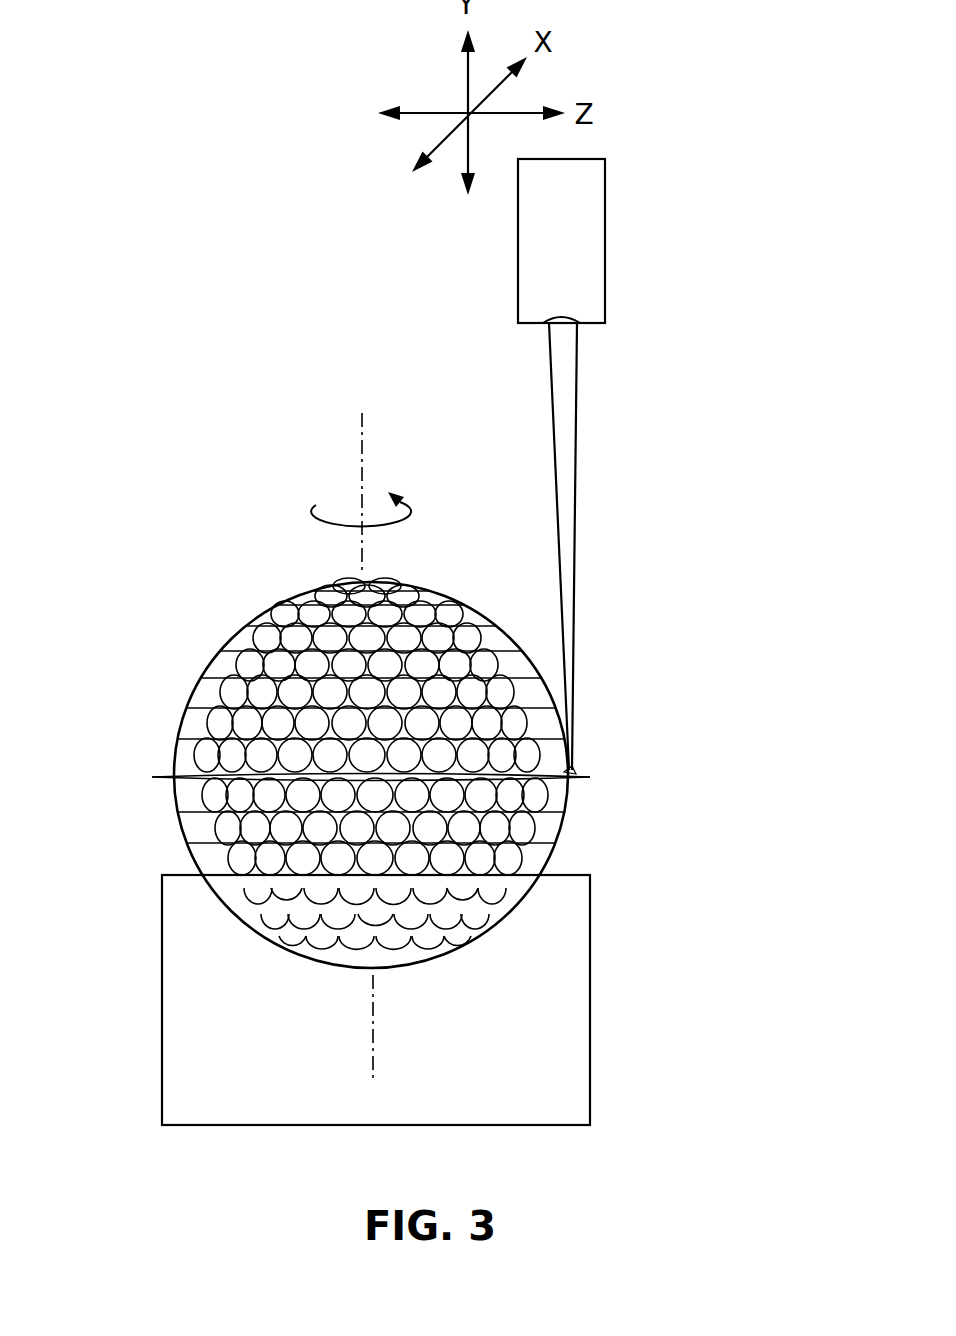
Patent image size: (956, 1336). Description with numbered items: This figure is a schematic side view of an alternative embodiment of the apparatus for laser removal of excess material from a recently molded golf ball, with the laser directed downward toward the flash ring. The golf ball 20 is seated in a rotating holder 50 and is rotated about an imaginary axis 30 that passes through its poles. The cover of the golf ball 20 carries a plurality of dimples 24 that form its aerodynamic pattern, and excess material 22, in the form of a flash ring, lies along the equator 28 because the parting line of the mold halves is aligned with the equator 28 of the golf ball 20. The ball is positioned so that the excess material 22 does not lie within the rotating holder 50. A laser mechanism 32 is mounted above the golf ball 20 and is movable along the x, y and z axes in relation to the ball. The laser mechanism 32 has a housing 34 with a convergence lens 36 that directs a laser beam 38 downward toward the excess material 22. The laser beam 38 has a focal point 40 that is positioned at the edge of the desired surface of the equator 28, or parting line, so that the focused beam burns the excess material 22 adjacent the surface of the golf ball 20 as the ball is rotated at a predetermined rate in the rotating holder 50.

The golf ball 20 is at (200, 622).
The excess material 22 is at (162, 777).
The dimples 24 is at (475, 628).
The equator 28 is at (172, 773).
The imaginary axis 30 is at (362, 425).
The laser mechanism 32 is at (640, 300).
The housing 34 is at (593, 230).
The convergence lens 36 is at (577, 325).
The laser beam 38 is at (570, 507).
The focal point 40 is at (571, 770).
The rotating holder 50 is at (173, 980).